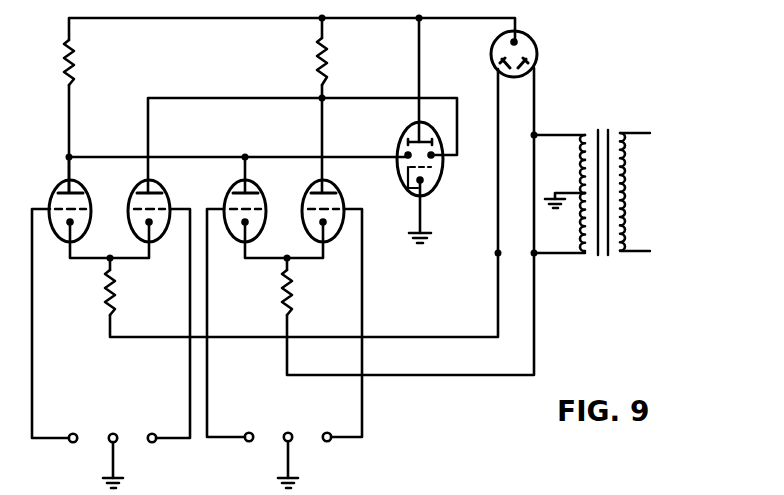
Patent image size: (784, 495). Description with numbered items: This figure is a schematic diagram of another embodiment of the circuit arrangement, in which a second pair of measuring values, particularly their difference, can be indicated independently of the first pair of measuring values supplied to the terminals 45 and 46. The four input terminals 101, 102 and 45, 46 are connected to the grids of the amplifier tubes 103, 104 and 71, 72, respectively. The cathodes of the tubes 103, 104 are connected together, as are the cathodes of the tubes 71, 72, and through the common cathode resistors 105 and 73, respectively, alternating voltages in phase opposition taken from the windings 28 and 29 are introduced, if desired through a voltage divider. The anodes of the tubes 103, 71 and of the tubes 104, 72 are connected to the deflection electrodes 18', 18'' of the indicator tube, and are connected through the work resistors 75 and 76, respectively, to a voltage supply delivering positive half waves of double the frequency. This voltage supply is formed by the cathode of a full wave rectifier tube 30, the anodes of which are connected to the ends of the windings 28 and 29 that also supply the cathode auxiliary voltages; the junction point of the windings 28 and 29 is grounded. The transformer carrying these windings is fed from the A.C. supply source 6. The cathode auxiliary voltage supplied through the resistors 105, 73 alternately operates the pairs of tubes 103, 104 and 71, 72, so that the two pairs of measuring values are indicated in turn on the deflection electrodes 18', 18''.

The work resistor 75 is at (81, 62).
The work resistor 76 is at (333, 61).
The amplifier tube 103 is at (56, 199).
The amplifier tube 104 is at (163, 210).
The amplifier tube 71 is at (237, 210).
The amplifier tube 72 is at (334, 210).
The common cathode resistor 105 is at (128, 292).
The common cathode resistor 73 is at (300, 292).
The input terminal 101 is at (77, 453).
The input terminal 102 is at (155, 453).
The input terminal 45 is at (250, 452).
The input terminal 46 is at (328, 452).
The deflection electrode 18' is at (385, 135).
The deflection electrode 18'' is at (454, 171).
The full wave rectifier tube 30 is at (525, 54).
The winding 28 is at (570, 164).
The winding 29 is at (570, 222).
The A.C. supply source 6 is at (631, 192).